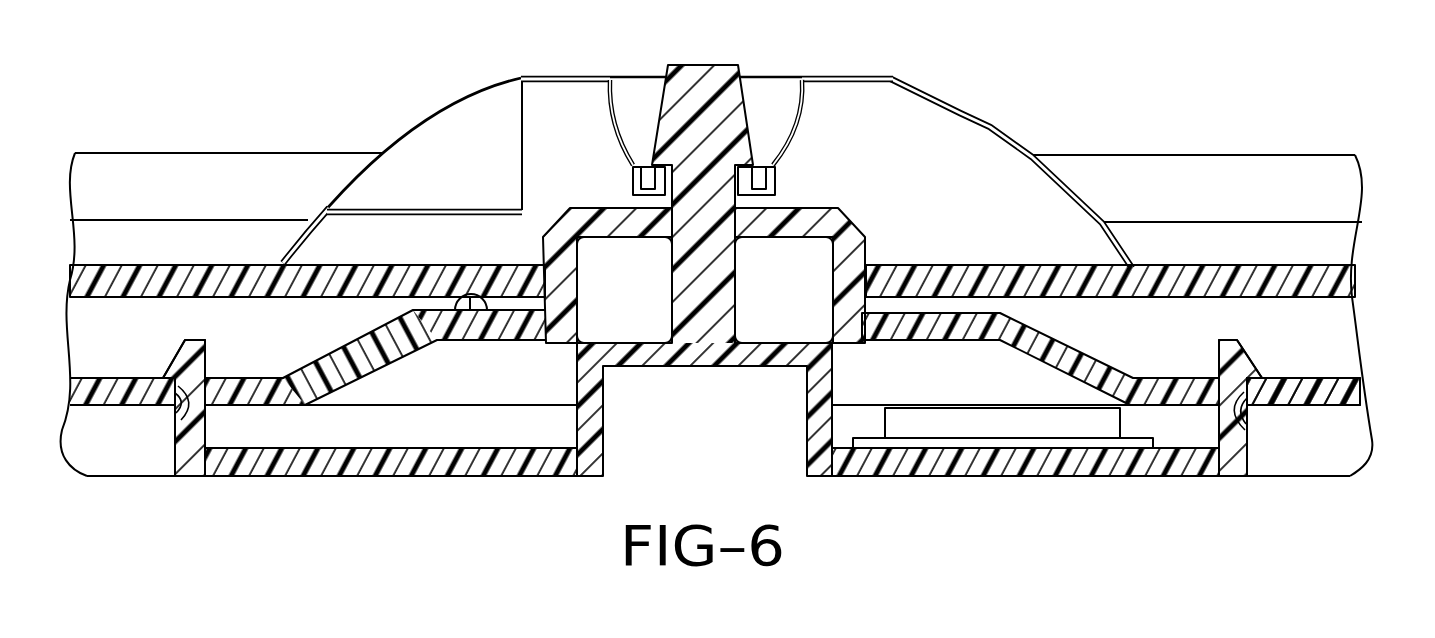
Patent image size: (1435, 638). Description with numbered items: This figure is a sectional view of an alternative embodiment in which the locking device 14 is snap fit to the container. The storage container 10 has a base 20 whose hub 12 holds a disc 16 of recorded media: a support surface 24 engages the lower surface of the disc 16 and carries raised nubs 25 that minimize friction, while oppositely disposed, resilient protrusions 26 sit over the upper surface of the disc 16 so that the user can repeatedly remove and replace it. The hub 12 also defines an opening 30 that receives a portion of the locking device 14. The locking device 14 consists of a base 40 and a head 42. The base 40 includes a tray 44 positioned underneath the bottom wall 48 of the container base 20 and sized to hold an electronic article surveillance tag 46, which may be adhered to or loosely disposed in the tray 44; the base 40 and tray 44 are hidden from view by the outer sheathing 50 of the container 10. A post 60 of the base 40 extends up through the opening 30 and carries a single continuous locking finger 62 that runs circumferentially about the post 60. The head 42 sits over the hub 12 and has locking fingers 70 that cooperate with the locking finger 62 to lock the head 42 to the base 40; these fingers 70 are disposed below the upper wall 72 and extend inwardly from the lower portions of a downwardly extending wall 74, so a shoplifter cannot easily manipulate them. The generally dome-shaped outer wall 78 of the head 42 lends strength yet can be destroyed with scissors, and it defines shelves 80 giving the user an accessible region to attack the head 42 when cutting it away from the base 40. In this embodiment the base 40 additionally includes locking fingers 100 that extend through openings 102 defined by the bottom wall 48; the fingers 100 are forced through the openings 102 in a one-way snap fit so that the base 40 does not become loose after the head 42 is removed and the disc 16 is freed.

The storage container 10 is at (1238, 150).
The hub 12 is at (321, 343).
The locking device 14 is at (1001, 118).
The disc 16 is at (1083, 298).
The base 20 is at (227, 152).
The support surface 24 is at (434, 298).
The raised nubs 25 is at (470, 298).
The protrusions 26 is at (543, 262).
The opening 30 is at (656, 240).
The base 40 is at (461, 471).
The head 42 is at (1089, 196).
The tray 44 is at (1112, 455).
The electronic article surveillance tag 46 is at (990, 430).
The bottom wall 48 is at (1328, 378).
The outer sheathing 50 is at (135, 478).
The post 60 is at (728, 292).
The locking finger 62 is at (793, 148).
The locking fingers 70 is at (628, 178).
The upper wall 72 is at (577, 75).
The downwardly extending wall 74 is at (773, 100).
The outer wall 78 is at (912, 82).
The shelves 80 is at (447, 208).
The locking fingers 100 is at (206, 428).
The openings 102 is at (178, 427).